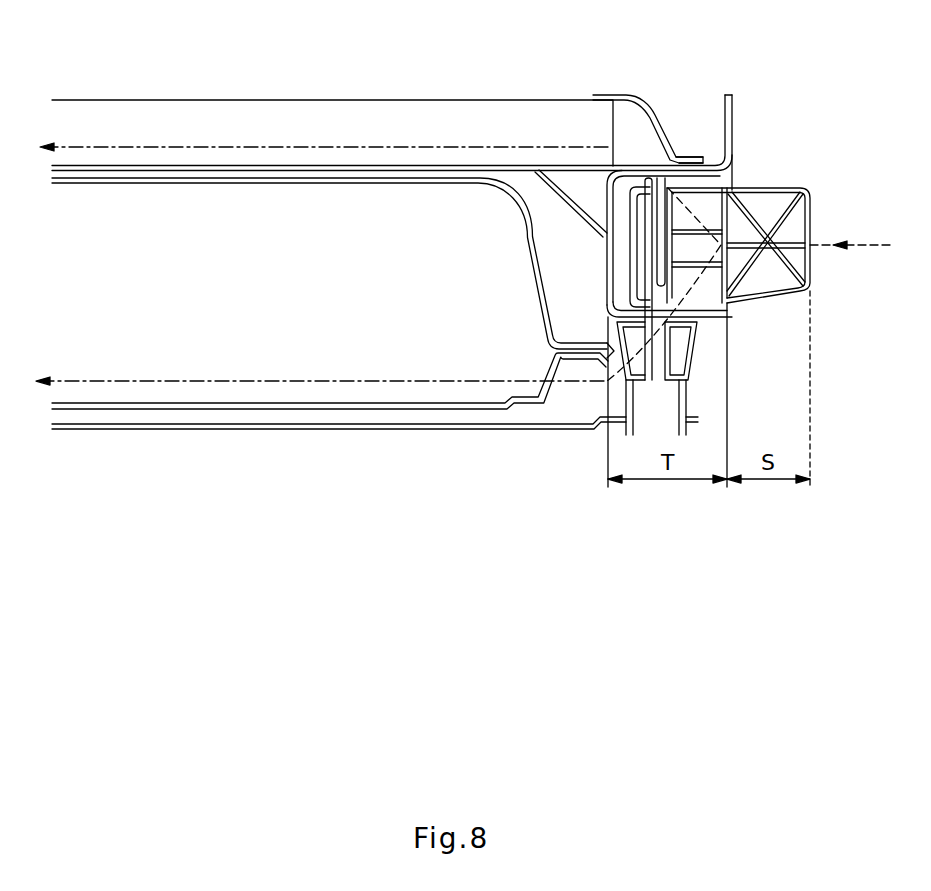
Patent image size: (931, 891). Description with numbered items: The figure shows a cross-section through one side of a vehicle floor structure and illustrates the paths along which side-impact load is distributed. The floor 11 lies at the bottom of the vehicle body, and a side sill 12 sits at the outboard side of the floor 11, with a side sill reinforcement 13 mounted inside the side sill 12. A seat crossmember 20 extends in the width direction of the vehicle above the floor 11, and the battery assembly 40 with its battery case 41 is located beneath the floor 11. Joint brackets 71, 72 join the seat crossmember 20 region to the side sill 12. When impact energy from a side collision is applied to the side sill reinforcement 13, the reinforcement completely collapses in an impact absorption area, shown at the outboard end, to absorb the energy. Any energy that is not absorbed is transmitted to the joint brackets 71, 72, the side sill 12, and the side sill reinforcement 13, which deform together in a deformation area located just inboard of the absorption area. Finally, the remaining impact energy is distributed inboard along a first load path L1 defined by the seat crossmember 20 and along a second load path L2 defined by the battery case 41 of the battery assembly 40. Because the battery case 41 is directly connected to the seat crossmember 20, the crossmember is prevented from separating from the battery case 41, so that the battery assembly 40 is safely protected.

The floor 11 is at (191, 163).
The side sill 12 is at (601, 268).
The side sill reinforcement 13 is at (799, 180).
The seat crossmember 20 is at (513, 127).
The battery assembly 40 is at (466, 430).
The battery case 41 is at (292, 410).
The joint bracket 71 is at (648, 93).
The joint bracket 72 is at (630, 127).
The first load path L1 is at (367, 147).
The second load path L2 is at (370, 382).